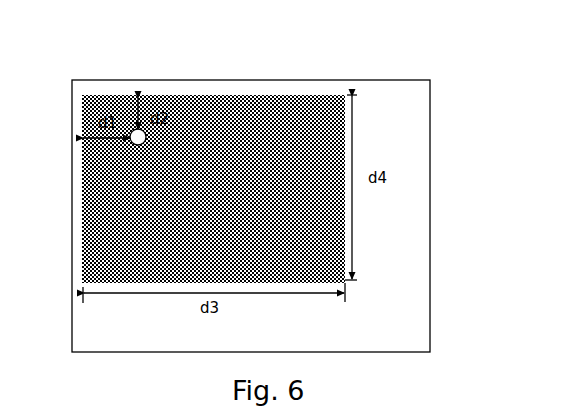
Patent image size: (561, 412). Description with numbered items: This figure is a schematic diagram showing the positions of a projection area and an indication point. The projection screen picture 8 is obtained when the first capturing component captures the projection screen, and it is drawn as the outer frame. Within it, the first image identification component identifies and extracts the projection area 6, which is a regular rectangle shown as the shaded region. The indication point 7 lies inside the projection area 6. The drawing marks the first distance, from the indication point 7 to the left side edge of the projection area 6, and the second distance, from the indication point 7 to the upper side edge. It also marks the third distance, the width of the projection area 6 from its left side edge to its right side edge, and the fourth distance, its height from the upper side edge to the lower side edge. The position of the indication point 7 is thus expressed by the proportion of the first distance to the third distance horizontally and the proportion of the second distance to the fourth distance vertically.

The projection area 6 is at (214, 98).
The indication point 7 is at (133, 143).
The projection screen picture 8 is at (430, 216).